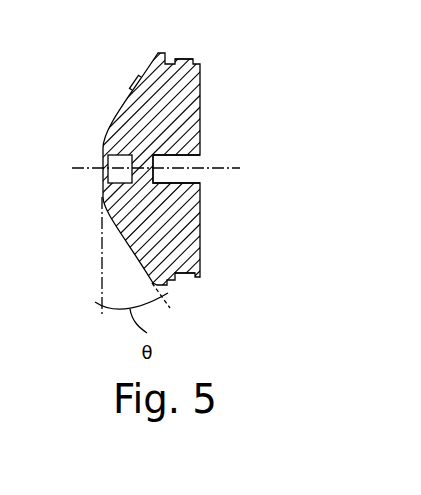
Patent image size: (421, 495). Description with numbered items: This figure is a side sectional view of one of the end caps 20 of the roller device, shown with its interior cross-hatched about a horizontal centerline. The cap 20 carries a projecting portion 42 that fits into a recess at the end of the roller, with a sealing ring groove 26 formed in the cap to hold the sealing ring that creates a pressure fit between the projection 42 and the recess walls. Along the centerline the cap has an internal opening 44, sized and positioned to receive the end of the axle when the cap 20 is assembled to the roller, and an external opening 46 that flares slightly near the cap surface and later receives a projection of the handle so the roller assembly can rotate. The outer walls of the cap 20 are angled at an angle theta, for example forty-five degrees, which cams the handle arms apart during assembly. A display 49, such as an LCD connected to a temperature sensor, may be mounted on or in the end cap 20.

The end cap 20 is at (143, 44).
The projecting portion 42 is at (197, 57).
The sealing ring groove 26 is at (188, 276).
The display 49 is at (137, 73).
The external opening 46 is at (107, 156).
The internal opening 44 is at (198, 162).